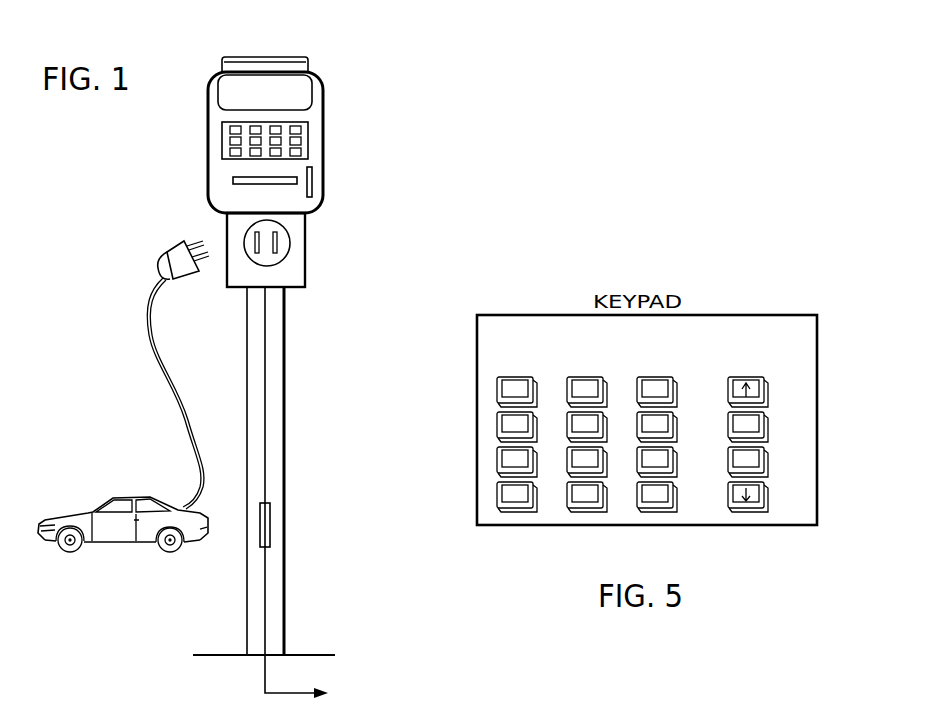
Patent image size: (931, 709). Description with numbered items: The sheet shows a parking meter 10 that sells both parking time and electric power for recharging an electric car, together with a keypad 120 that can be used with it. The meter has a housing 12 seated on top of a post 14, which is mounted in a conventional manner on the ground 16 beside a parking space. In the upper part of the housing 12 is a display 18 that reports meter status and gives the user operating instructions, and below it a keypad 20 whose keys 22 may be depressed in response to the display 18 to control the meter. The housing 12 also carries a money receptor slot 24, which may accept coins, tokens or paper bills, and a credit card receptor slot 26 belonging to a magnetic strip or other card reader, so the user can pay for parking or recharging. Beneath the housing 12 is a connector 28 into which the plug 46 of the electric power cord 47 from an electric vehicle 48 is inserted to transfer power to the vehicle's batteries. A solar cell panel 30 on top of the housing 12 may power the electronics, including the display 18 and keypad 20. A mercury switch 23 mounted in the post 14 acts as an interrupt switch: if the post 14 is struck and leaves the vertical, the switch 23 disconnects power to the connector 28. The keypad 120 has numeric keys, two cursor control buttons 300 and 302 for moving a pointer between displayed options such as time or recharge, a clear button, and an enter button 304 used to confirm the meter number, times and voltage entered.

In FIG. 1, the parking meter 10 is at (433, 115).
In FIG. 1, the housing 12 is at (332, 85).
In FIG. 1, the post 14 is at (285, 425).
In FIG. 1, the ground 16 is at (296, 677).
In FIG. 1, the display 18 is at (293, 97).
In FIG. 1, the keypad 20 is at (320, 143).
In FIG. 1, the keys 22 is at (227, 142).
In FIG. 1, the mercury switch 23 is at (271, 518).
In FIG. 1, the money receptor slot 24 is at (313, 180).
In FIG. 1, the credit card receptor slot 26 is at (283, 187).
In FIG. 1, the connector 28 is at (280, 258).
In FIG. 1, the solar cell panel 30 is at (270, 57).
In FIG. 1, the plug 46 is at (165, 252).
In FIG. 1, the electric power cord 47 is at (163, 382).
In FIG. 1, the electric vehicle 48 is at (120, 495).
In FIG. 5, the keypad 120 is at (729, 302).
In FIG. 5, the cursor control button 300 is at (770, 392).
In FIG. 5, the cursor control button 302 is at (770, 462).
In FIG. 5, the enter button 304 is at (770, 428).